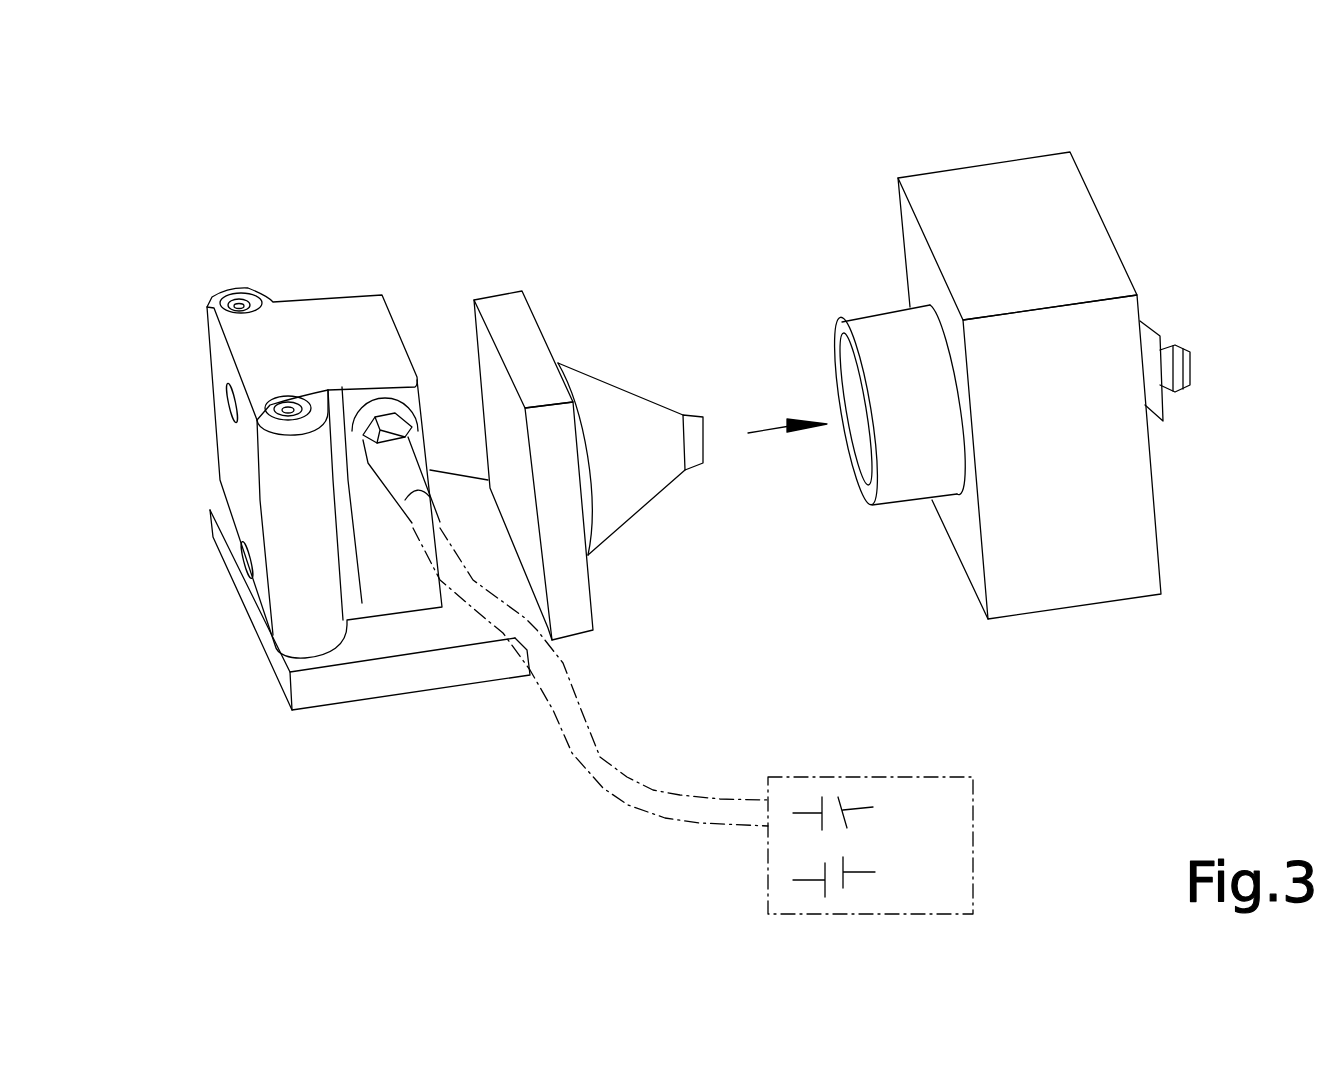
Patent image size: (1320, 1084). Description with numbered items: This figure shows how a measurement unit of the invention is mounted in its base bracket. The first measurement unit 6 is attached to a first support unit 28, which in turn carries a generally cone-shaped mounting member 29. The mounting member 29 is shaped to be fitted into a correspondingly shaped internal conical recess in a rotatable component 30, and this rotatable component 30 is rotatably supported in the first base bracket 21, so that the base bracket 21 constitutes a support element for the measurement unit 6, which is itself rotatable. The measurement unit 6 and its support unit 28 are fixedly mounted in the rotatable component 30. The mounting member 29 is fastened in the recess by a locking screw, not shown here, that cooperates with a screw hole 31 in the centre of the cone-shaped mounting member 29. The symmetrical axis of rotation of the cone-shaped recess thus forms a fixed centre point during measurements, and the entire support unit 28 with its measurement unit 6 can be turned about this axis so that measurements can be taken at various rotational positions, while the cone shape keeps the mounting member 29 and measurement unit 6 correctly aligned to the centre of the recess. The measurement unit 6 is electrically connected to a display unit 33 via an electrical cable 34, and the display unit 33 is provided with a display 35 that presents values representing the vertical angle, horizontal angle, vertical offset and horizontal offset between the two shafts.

The first measurement unit 6 is at (257, 355).
The first base bracket 21 is at (1010, 177).
The first support unit 28 is at (427, 640).
The cone-shaped mounting member 29 is at (633, 497).
The rotatable component 30 is at (890, 322).
The screw hole 31 is at (703, 442).
The display unit 33 is at (887, 772).
The electrical cable 34 is at (628, 797).
The display 35 is at (957, 845).